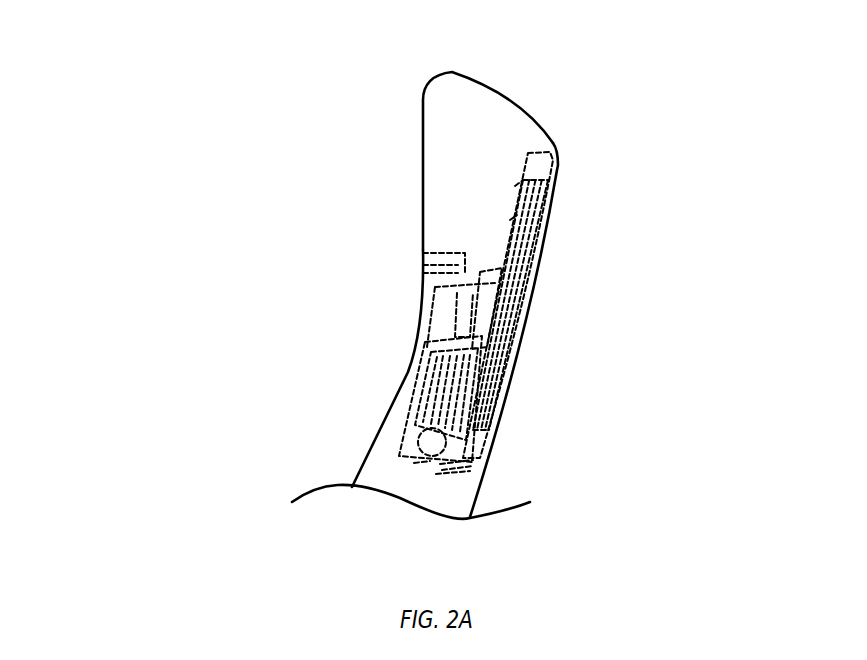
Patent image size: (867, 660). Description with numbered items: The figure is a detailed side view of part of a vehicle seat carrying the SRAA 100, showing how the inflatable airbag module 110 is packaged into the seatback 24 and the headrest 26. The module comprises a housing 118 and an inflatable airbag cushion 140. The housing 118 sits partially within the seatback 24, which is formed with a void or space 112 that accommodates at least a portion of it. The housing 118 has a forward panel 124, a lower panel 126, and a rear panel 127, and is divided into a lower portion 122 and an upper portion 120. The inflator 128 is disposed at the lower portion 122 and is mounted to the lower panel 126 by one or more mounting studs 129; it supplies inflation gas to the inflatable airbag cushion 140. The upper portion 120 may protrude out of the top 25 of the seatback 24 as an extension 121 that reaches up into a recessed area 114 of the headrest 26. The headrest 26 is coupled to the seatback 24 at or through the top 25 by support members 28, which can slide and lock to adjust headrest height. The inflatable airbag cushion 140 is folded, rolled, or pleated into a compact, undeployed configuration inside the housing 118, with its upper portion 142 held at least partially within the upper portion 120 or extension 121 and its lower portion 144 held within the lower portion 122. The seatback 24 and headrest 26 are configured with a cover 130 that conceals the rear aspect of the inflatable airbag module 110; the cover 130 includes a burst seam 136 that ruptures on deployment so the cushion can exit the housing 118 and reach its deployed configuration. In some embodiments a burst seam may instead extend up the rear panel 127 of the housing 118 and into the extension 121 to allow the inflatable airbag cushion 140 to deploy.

The SRAA 100 is at (212, 142).
The inflatable airbag module 110 is at (670, 126).
The seatback 24 is at (370, 447).
The top 25 is at (423, 263).
The headrest 26 is at (428, 83).
The support members 28 is at (420, 262).
The space 112 is at (430, 320).
The recessed area 114 is at (550, 142).
The housing 118 is at (418, 358).
The upper portion 120 is at (515, 222).
The extension 121 is at (522, 195).
The lower portion 122 is at (412, 425).
The forward panel 124 is at (424, 367).
The lower panel 126 is at (445, 472).
The rear panel 127 is at (513, 362).
The inflator 128 is at (483, 454).
The mounting studs 129 is at (418, 466).
The cover 130 is at (531, 290).
The burst seam 136 is at (526, 323).
The inflatable airbag cushion 140 is at (519, 343).
The upper portion 142 is at (548, 237).
The lower portion 144 is at (505, 397).